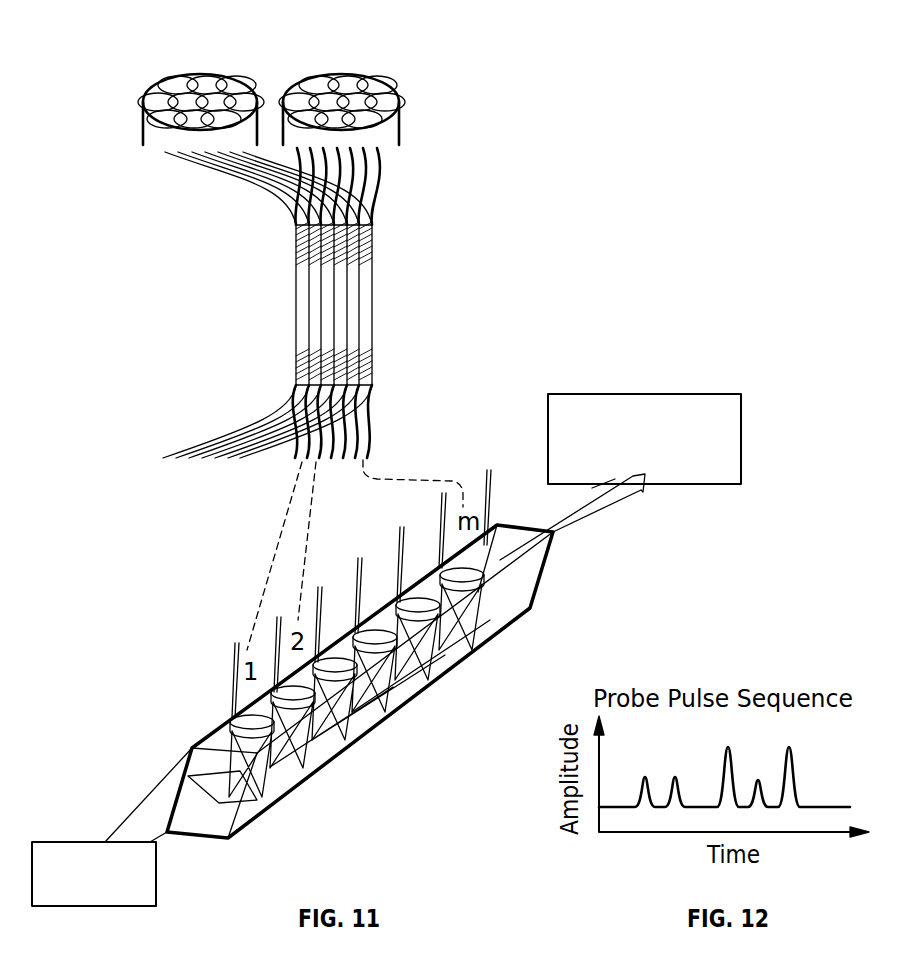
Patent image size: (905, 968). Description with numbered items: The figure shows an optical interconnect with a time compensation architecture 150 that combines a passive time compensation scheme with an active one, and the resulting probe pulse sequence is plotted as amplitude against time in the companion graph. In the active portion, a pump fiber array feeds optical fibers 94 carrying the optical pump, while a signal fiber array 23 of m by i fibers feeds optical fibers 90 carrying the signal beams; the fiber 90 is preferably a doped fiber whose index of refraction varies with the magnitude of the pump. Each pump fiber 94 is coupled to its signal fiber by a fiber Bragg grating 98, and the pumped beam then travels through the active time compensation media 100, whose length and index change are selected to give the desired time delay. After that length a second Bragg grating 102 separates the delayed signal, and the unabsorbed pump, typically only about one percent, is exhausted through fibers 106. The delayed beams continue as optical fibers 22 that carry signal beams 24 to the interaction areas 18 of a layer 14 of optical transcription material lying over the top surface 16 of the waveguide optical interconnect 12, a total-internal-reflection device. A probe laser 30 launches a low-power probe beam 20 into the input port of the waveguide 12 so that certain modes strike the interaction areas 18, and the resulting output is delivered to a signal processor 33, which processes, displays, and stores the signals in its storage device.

The waveguide optical interconnect 12 is at (406, 663).
The layer of optical transcription material 14 is at (359, 642).
The top surface 16 is at (193, 793).
The interaction areas 18 is at (337, 682).
The probe beam 20 is at (138, 795).
The optical fibers 22 is at (367, 421).
The signal fiber array 23 is at (381, 76).
The signal beams 24 is at (337, 594).
The probe laser 30 is at (94, 897).
The signal processor 33 is at (644, 463).
The optical fiber 90 is at (381, 171).
The optical fiber 94 is at (262, 188).
The fiber Bragg grating 98 is at (467, 259).
The active time compensation media 100 is at (539, 305).
The Bragg grating 102 is at (467, 380).
The fiber 106 is at (250, 452).
The time compensation architecture 150 is at (467, 263).